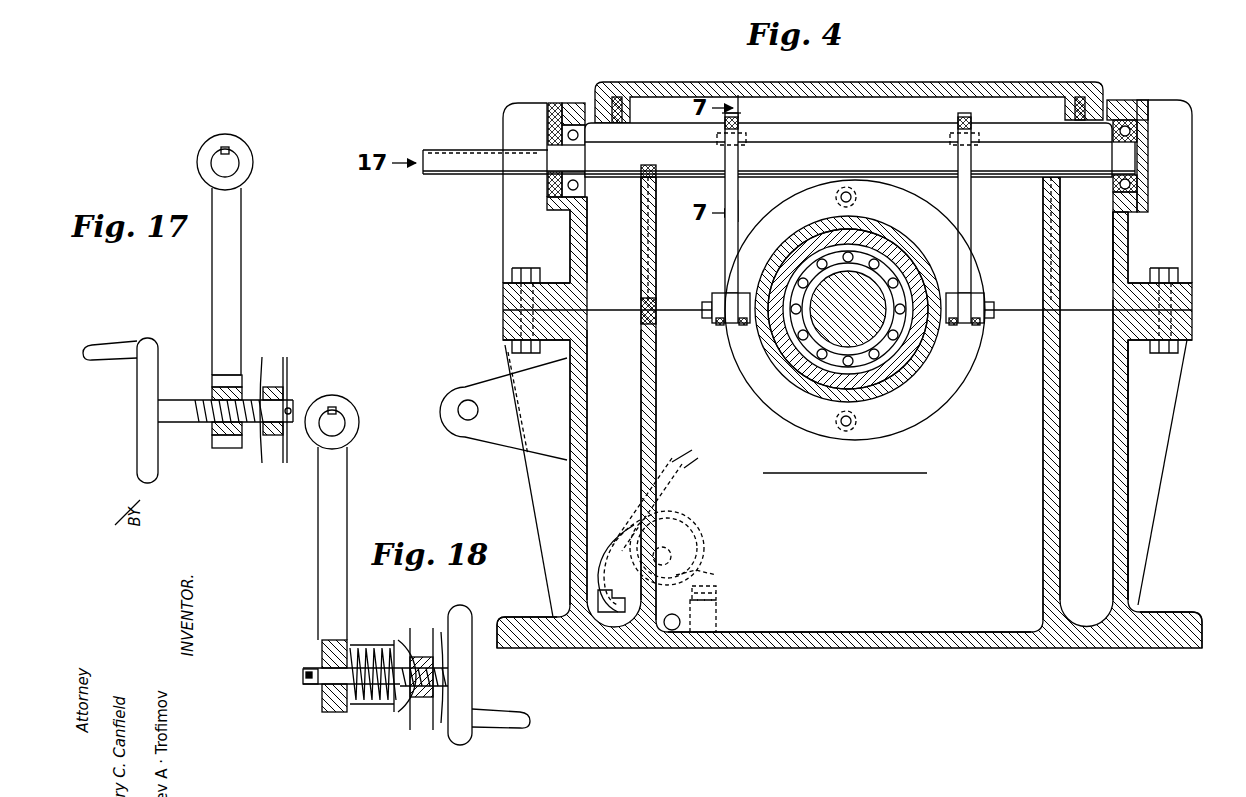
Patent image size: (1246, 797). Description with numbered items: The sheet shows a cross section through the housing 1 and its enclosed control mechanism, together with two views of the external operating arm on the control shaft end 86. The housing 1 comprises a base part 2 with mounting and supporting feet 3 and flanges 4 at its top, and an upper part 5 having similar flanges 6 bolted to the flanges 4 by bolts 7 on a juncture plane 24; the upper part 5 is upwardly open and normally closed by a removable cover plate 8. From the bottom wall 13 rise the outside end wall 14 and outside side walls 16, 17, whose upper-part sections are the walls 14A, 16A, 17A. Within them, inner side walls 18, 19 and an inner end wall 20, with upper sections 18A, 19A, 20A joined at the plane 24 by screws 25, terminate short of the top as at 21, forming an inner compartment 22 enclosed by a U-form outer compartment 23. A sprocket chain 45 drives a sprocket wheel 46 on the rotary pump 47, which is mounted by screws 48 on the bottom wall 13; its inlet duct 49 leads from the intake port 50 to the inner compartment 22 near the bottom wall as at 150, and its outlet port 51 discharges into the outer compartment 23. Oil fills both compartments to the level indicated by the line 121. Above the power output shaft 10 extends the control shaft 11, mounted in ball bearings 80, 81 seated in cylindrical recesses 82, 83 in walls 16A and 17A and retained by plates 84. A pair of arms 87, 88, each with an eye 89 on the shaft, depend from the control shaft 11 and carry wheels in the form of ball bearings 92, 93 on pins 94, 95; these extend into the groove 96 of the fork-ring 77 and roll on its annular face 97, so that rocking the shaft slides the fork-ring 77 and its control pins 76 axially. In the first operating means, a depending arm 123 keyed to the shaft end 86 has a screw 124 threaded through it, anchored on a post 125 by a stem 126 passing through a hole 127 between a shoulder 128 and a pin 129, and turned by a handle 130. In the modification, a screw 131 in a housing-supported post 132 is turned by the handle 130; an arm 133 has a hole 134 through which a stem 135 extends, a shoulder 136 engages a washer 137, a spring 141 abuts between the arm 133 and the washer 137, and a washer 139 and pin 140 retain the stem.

In FIG. 4, the housing 1 is at (1130, 508).
In FIG. 4, the base part 2 is at (1128, 438).
In FIG. 4, the mounting and supporting feet 3 is at (522, 617).
In FIG. 4, the flanges 4 is at (503, 328).
In FIG. 4, the upper part 5 is at (1128, 228).
In FIG. 4, the flanges 6 is at (503, 290).
In FIG. 4, the bolts 7 is at (527, 268).
In FIG. 4, the cover plate 8 is at (652, 82).
In FIG. 4, the power output shaft 10 is at (848, 309).
In FIG. 4, the control shaft 11 is at (445, 174).
In FIG. 4, the bottom wall 13 is at (786, 632).
In FIG. 4, the outside end wall 14 is at (614, 355).
In FIG. 4, the outside end wall upper section 14A is at (612, 240).
In FIG. 4, the outside side wall 16 is at (586, 416).
In FIG. 4, the outside side wall upper section 16A is at (587, 288).
In FIG. 4, the outside side wall 17 is at (1113, 385).
In FIG. 4, the outside side wall upper section 17A is at (1113, 238).
In FIG. 4, the inner side wall 18 is at (657, 414).
In FIG. 4, the inner side wall upper section 18A is at (657, 281).
In FIG. 4, the inner side wall 19 is at (1043, 478).
In FIG. 4, the inner side wall upper section 19A is at (1043, 268).
In FIG. 4, the inner end wall 20 is at (849, 412).
In FIG. 4, the inner end wall upper section 20A is at (1009, 210).
In FIG. 4, the top of inner walls 21 is at (683, 178).
In FIG. 4, the inner compartment 22 is at (850, 485).
In FIG. 4, the outer compartment 23 is at (850, 480).
In FIG. 4, the juncture plane 24 is at (622, 312).
In FIG. 4, the screws 25 is at (1043, 222).
In FIG. 4, the sprocket chain 45 is at (660, 500).
In FIG. 4, the sprocket wheel 46 is at (683, 522).
In FIG. 4, the rotary pump 47 is at (700, 545).
In FIG. 4, the screws 48 is at (722, 602).
In FIG. 4, the inlet duct 49 is at (719, 590).
In FIG. 4, the intake port 50 is at (700, 572).
In FIG. 4, the outlet port 51 is at (622, 530).
In FIG. 4, the control pins 76 is at (858, 197).
In FIG. 4, the fork-ring 77 is at (946, 385).
In FIG. 4, the ball bearing 80 is at (583, 186).
In FIG. 4, the ball bearing 81 is at (1113, 186).
In FIG. 4, the cylindrical recess 82 is at (565, 103).
In FIG. 4, the cylindrical recess 83 is at (1118, 112).
In FIG. 4, the plates 84 is at (548, 112).
In FIG. 4, the control shaft end 86 is at (424, 150).
In FIG. 17, the control shaft end 86 is at (238, 156).
In FIG. 18, the control shaft end 86 is at (346, 430).
In FIG. 4, the arm 87 is at (738, 252).
In FIG. 4, the arm 88 is at (958, 252).
In FIG. 4, the eye 89 is at (747, 155).
In FIG. 4, the ball bearings 92 is at (727, 326).
In FIG. 4, the ball bearings 93 is at (953, 326).
In FIG. 4, the pin 94 is at (712, 315).
In FIG. 4, the pin 95 is at (986, 315).
In FIG. 4, the groove 96 is at (932, 398).
In FIG. 4, the annular face 97 is at (762, 406).
In FIG. 4, the oil level line 121 is at (812, 476).
In FIG. 17, the depending arm 123 is at (236, 230).
In FIG. 17, the screw 124 is at (210, 420).
In FIG. 4, the post 125 is at (515, 449).
In FIG. 17, the post 125 is at (284, 375).
In FIG. 17, the stem 126 is at (288, 463).
In FIG. 17, the hole 127 is at (272, 385).
In FIG. 17, the shoulder 128 is at (258, 425).
In FIG. 17, the pin 129 is at (290, 407).
In FIG. 17, the handle 130 is at (138, 437).
In FIG. 18, the handle 130 is at (473, 737).
In FIG. 18, the screw 131 is at (442, 727).
In FIG. 18, the post 132 is at (422, 722).
In FIG. 18, the arm 133 is at (340, 532).
In FIG. 18, the hole 134 is at (322, 645).
In FIG. 18, the stem 135 is at (305, 683).
In FIG. 18, the shoulder 136 is at (405, 665).
In FIG. 18, the washer 137 is at (394, 712).
In FIG. 18, the washer 139 is at (322, 705).
In FIG. 18, the pin 140 is at (308, 672).
In FIG. 18, the spring 141 is at (362, 706).
In FIG. 4, the inlet duct opening 150 is at (690, 616).